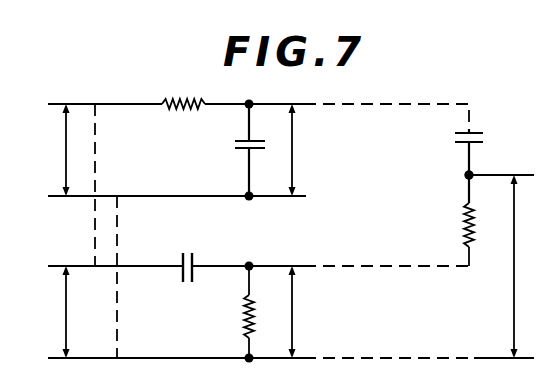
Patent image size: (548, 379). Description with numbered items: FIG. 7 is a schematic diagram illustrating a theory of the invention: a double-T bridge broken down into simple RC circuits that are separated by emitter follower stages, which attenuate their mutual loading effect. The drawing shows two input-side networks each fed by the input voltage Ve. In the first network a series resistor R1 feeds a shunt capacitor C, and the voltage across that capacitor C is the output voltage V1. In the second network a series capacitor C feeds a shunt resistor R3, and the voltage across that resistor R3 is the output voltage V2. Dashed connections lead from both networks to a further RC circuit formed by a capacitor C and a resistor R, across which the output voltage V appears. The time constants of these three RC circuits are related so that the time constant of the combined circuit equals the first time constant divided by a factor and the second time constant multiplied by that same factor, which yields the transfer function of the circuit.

The series resistor of first RC circuit R1 is at (183, 92).
The capacitor C is at (368, 153).
The output voltage of first RC circuit V1 is at (306, 150).
The input voltage Ve is at (51, 231).
The shunt resistor of second RC circuit R3 is at (264, 312).
The output voltage of second RC circuit V2 is at (306, 312).
The resistor of combined RC circuit R is at (477, 225).
The output voltage V is at (523, 266).